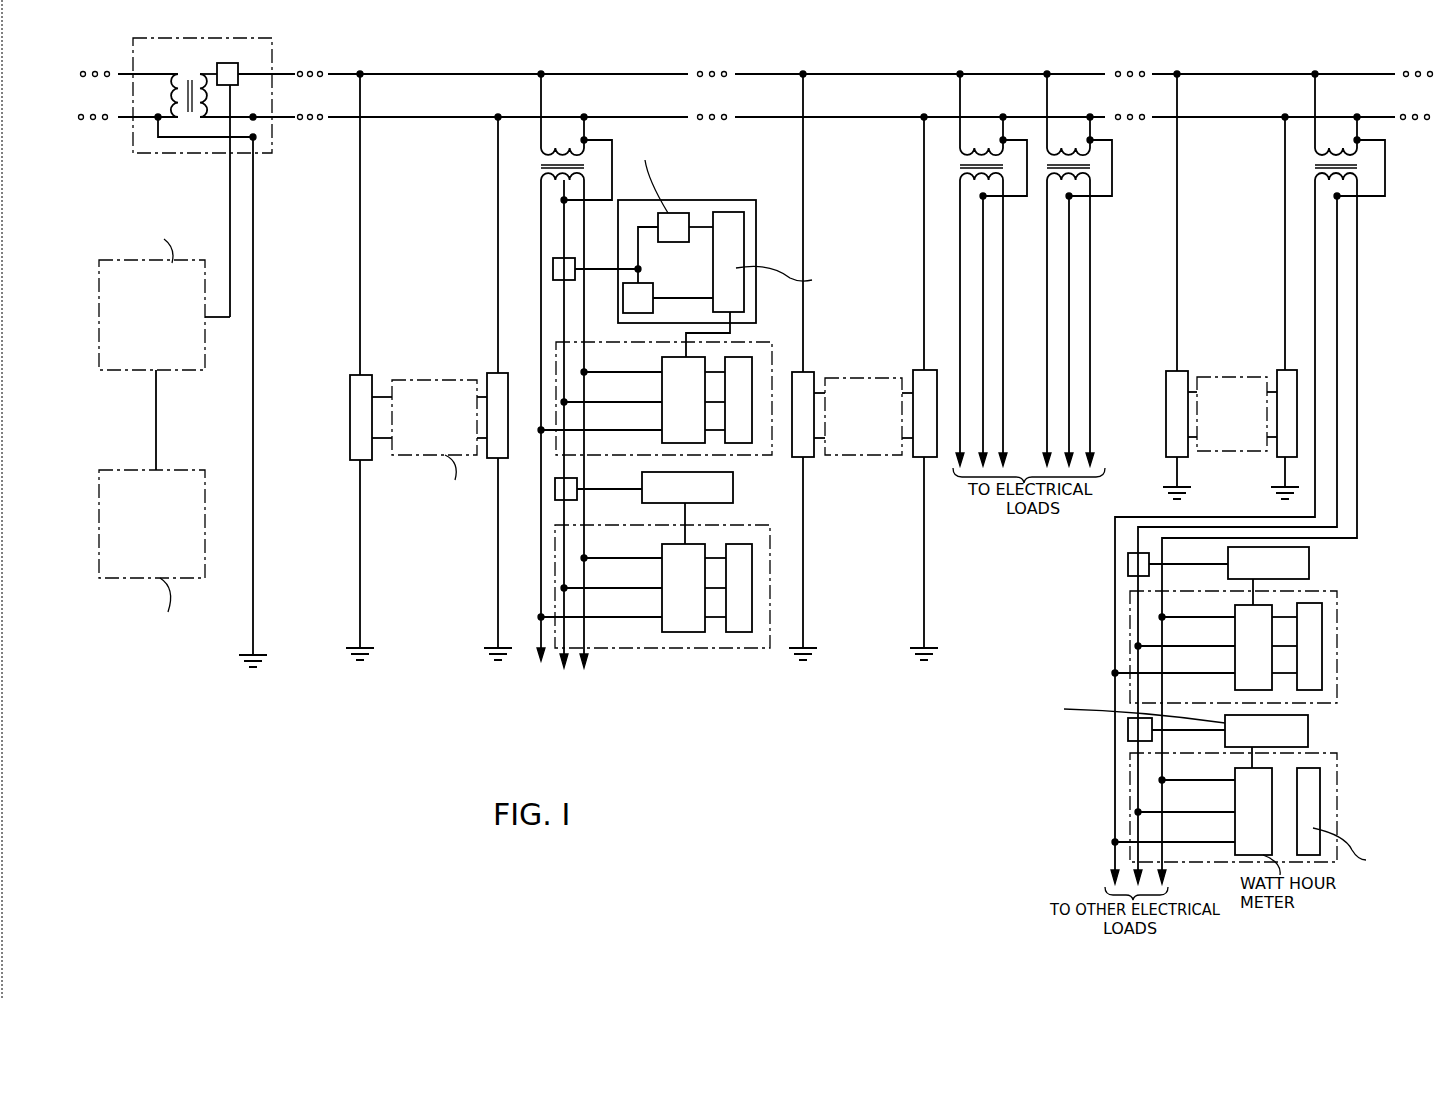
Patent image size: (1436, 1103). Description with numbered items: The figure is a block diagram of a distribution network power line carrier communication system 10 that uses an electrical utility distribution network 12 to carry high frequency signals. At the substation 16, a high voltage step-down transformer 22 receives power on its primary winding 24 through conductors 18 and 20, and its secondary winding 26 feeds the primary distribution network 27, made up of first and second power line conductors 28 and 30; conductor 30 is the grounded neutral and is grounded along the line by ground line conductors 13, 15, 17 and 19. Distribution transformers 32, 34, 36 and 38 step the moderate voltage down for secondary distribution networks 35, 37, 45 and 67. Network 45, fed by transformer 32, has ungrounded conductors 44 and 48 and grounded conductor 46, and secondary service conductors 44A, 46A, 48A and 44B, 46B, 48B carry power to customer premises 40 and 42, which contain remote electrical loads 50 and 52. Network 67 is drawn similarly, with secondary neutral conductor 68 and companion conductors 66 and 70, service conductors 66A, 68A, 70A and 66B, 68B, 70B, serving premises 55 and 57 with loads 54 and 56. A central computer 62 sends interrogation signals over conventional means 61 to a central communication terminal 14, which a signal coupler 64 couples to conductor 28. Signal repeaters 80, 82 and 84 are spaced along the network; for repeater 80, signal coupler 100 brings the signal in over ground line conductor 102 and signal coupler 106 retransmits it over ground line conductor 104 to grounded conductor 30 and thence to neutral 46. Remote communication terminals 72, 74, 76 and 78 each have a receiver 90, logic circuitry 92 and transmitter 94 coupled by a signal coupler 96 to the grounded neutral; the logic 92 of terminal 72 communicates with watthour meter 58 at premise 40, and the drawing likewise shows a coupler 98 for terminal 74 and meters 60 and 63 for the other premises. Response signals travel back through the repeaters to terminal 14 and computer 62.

The distribution network power line carrier communication system 10 is at (770, 716).
The electrical utility distribution network 12 is at (630, 59).
The ground line conductor 13 is at (256, 520).
The central communication terminal 14 is at (162, 331).
The ground line conductor 15 is at (498, 600).
The substation 16 is at (253, 38).
The ground line conductor 17 is at (924, 514).
The conductor 18 is at (131, 72).
The ground line conductor 19 is at (1285, 470).
The conductor 20 is at (132, 120).
The high voltage step-down transformer 22 is at (203, 65).
The primary winding 24 is at (163, 109).
The secondary winding 26 is at (227, 109).
The distribution network primary conductors 27 is at (644, 108).
The first power line conductor 28 is at (450, 73).
The second power line conductor 30 is at (445, 116).
The distribution transformer 32 is at (576, 147).
The distribution transformer 34 is at (995, 141).
The secondary distribution network conductors 35 is at (1036, 324).
The distribution transformer 36 is at (1080, 141).
The secondary distribution network conductors 37 is at (1121, 324).
The distribution transformer 38 is at (1348, 141).
The customer premise 40 is at (766, 333).
The customer premise 42 is at (745, 506).
The ungrounded conductor 44 is at (540, 215).
The secondary service conductor 44A is at (648, 428).
The secondary service conductor 44B is at (650, 615).
The secondary distribution network 45 is at (532, 415).
The grounded conductor 46 is at (564, 231).
The secondary service conductor 46A is at (648, 400).
The secondary service conductor 46B is at (650, 586).
The ungrounded conductor 48 is at (586, 236).
The secondary service conductor 48A is at (648, 370).
The secondary service conductor 48B is at (650, 556).
The remote electrical load 50 is at (744, 397).
The remote electrical load 52 is at (744, 593).
The remote electrical load 54 is at (1313, 652).
The customer premise 55 is at (1340, 598).
The remote electrical load 56 is at (1313, 805).
The customer premise 57 is at (1328, 750).
The watthour meter 58 is at (696, 407).
The watt hour meter 60 is at (696, 598).
The conventional means 61 is at (158, 410).
The central computer 62 is at (164, 540).
The watt hour meter 63 is at (1266, 656).
The signal coupler 64 is at (238, 69).
The secondary conductor 66 is at (1315, 233).
The branch conductor 66A is at (1220, 671).
The branch conductor 66B is at (1220, 840).
The secondary distribution network 67 is at (1085, 684).
The secondary neutral conductor 68 is at (1337, 262).
The branch conductor 68A is at (1220, 644).
The branch conductor 68B is at (1220, 810).
The secondary conductor 70 is at (1357, 243).
The branch conductor 70A is at (1220, 615).
The branch conductor 70B is at (1220, 778).
The remote communication terminal 72 is at (728, 190).
The remote communication terminal 74 is at (699, 499).
The remote communication terminal 76 is at (1280, 574).
The remote communication terminal 78 is at (1278, 742).
The signal repeater 80 is at (447, 429).
The signal repeater 82 is at (876, 425).
The signal repeater 84 is at (1245, 424).
The receiver 90 is at (623, 300).
The logic circuitry 92 is at (740, 238).
The transmitter 94 is at (683, 213).
The signal coupler 96 is at (553, 278).
The signal coupler 98 is at (555, 489).
The signal coupler 100 is at (350, 386).
The ground line conductor 102 is at (360, 194).
The ground line conductor 104 is at (498, 194).
The signal coupler 106 is at (492, 371).